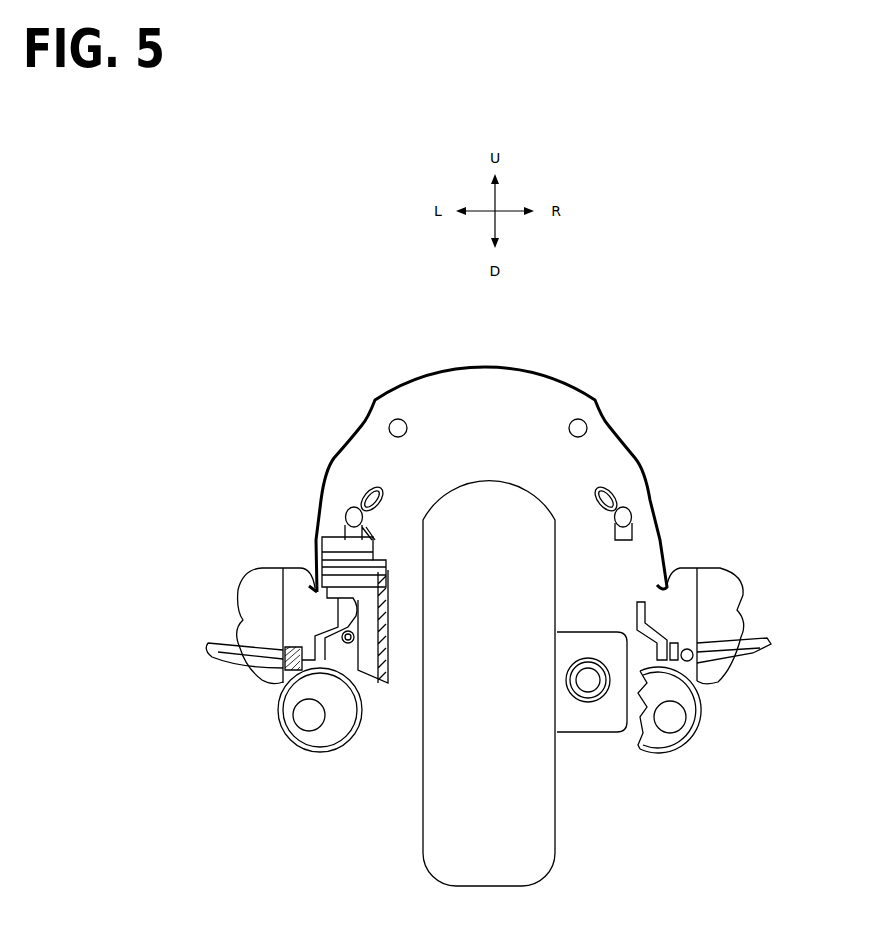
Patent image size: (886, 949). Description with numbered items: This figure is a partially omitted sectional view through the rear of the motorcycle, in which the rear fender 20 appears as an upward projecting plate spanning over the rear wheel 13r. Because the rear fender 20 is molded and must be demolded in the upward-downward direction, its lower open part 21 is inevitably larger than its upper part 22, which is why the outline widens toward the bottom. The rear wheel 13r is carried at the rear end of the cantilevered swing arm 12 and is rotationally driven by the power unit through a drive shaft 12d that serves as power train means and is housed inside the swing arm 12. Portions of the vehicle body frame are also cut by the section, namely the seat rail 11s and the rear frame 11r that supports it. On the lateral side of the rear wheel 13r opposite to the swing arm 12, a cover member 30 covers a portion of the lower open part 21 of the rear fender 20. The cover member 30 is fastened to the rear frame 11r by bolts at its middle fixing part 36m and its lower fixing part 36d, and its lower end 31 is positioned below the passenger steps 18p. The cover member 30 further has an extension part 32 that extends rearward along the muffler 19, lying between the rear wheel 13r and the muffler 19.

The rear fender 20 is at (602, 398).
The upper part 22 is at (490, 383).
The seat rail 11s is at (408, 421).
The rear frame 11r is at (348, 511).
The lower open part 21 is at (407, 591).
The rear wheel 13r is at (458, 875).
The cover member 30 is at (322, 546).
The middle fixing part 36m is at (316, 567).
The lower end 31 is at (342, 668).
The extension part 32 is at (356, 673).
The lower fixing part 36d is at (355, 636).
The passenger steps 18p is at (216, 658).
The muffler 19 is at (291, 730).
The swing arm 12 is at (619, 735).
The drive shaft 12d is at (588, 702).